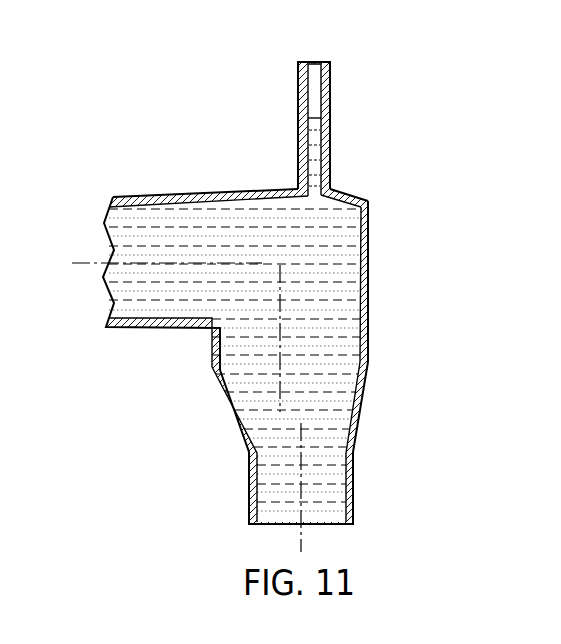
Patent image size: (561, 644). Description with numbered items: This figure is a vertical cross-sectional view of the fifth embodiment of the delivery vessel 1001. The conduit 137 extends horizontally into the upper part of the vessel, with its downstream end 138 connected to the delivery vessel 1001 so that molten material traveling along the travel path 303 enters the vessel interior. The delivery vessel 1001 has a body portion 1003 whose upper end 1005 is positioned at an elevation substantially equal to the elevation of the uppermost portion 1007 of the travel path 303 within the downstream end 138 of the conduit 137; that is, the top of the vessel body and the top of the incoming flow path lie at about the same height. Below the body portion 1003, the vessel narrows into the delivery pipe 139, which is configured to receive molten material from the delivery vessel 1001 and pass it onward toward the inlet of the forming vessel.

The delivery vessel 1001 is at (380, 100).
The conduit 137 is at (105, 154).
The downstream end 138 is at (152, 198).
The uppermost portion 1007 is at (230, 203).
The upper end 1005 is at (369, 201).
The body portion 1003 is at (371, 272).
The delivery pipe 139 is at (354, 485).
The travel path 303 is at (82, 262).